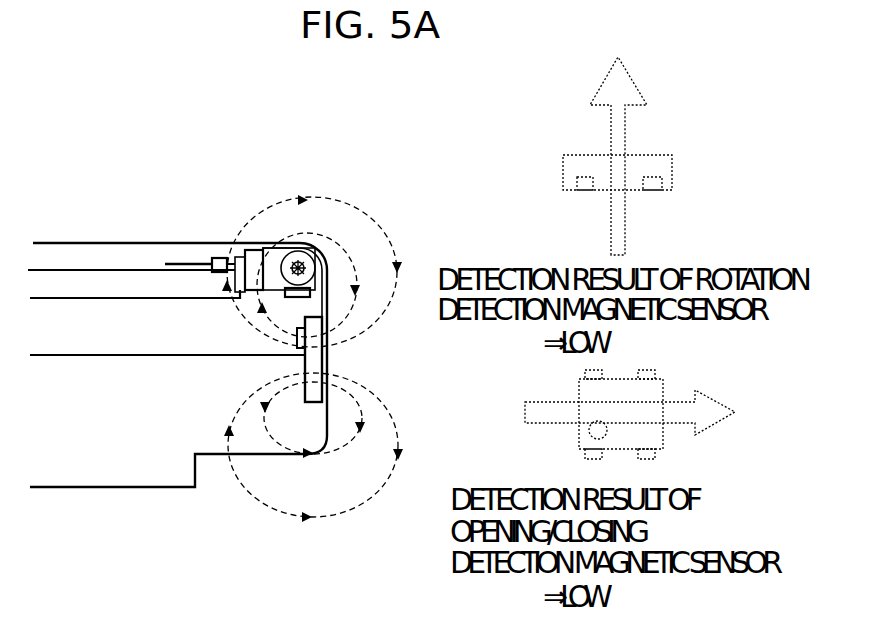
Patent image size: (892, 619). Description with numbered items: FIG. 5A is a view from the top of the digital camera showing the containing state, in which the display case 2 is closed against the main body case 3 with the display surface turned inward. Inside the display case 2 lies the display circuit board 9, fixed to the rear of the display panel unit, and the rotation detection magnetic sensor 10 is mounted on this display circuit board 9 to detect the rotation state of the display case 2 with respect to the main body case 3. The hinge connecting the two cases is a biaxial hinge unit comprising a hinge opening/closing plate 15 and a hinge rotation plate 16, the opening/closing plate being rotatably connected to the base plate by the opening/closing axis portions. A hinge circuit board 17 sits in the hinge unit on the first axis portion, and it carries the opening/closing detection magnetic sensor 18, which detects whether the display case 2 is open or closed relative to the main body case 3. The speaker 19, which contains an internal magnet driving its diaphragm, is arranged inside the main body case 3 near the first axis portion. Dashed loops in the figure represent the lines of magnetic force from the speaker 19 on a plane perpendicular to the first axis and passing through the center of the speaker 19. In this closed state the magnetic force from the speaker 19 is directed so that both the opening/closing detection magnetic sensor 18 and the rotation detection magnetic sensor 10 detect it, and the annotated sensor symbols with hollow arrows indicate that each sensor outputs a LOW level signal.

The display case 2 is at (68, 243).
The main body case 3 is at (206, 455).
The display circuit board 9 is at (172, 262).
The rotation detection magnetic sensor 10 is at (218, 258).
The hinge opening/closing plate 15 is at (280, 253).
The hinge rotation plate 16 is at (243, 253).
The hinge circuit board 17 is at (302, 245).
The opening/closing detection magnetic sensor 18 is at (312, 262).
The speaker 19 is at (315, 355).